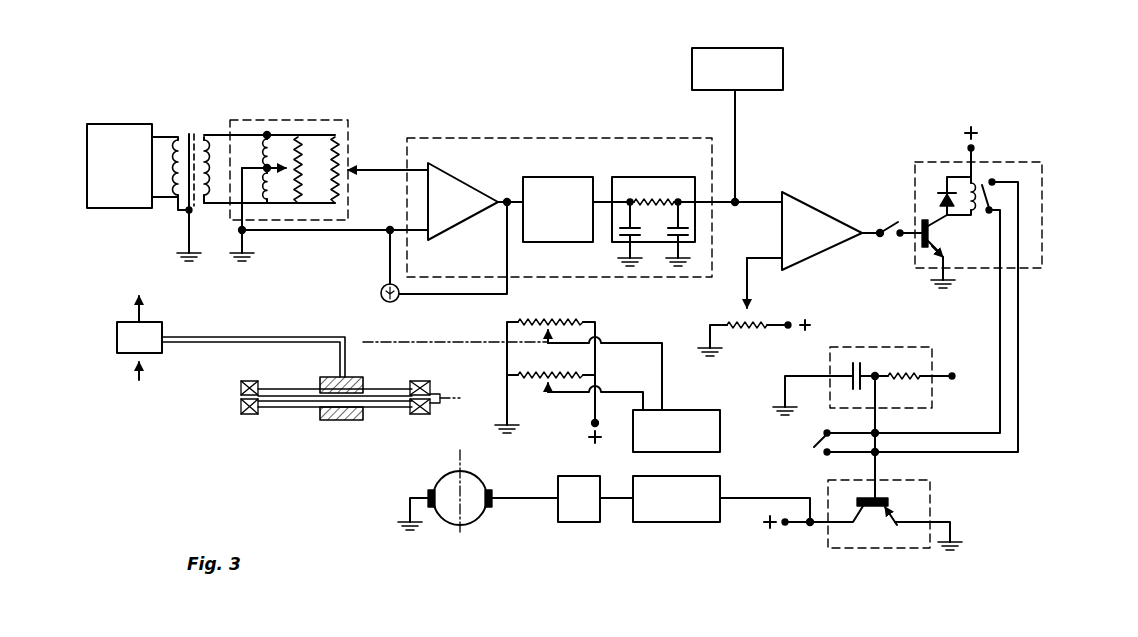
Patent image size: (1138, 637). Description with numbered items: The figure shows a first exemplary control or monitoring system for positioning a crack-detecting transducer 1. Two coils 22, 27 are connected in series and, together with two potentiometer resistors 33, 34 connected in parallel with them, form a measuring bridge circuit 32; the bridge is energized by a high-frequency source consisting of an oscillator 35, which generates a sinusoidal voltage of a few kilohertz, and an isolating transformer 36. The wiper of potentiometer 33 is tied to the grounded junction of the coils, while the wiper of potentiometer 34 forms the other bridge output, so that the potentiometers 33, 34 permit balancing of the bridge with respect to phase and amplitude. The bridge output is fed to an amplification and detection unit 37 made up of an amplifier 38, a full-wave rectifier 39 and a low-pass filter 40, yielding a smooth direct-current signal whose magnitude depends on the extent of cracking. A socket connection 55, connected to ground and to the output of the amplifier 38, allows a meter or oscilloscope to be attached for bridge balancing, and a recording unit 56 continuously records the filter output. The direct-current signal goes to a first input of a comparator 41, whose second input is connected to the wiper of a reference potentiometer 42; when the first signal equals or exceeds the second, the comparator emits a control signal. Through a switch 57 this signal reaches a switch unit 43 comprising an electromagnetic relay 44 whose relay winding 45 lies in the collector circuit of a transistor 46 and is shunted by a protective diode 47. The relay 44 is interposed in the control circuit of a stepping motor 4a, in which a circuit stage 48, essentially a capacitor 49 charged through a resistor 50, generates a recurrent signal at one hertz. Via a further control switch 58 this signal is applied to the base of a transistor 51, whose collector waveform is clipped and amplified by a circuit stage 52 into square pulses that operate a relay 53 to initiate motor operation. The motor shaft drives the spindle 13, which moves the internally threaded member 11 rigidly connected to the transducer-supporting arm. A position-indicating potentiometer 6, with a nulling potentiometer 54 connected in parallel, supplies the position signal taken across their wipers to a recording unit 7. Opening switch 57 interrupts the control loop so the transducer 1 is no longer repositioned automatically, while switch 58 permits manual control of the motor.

The transducer 1 is at (150, 348).
The stepping motor 4a is at (486, 524).
The position-indicating potentiometer 6 is at (566, 318).
The recording unit 7 is at (714, 438).
The internally threaded member 11 is at (330, 418).
The drive spindle 13 is at (387, 402).
The coil 22 is at (262, 150).
The coil 27 is at (272, 190).
The bridge circuit 32 is at (345, 110).
The potentiometer resistor 33 is at (302, 158).
The potentiometer resistor 34 is at (340, 185).
The oscillator 35 is at (116, 135).
The isolating transformer 36 is at (180, 124).
The amplification and detection unit 37 is at (604, 130).
The amplifier 38 is at (450, 188).
The full-wave rectifier 39 is at (545, 192).
The low-pass filter 40 is at (658, 190).
The comparator 41 is at (806, 222).
The reference potentiometer 42 is at (762, 316).
The switch unit 43 is at (1050, 214).
The electromagnetic relay 44 is at (1014, 168).
The relay winding 45 is at (966, 185).
The transistor 46 is at (928, 262).
The diode 47 is at (940, 200).
The recurrent-signal generator stage 48 is at (942, 360).
The capacitor 49 is at (850, 368).
The resistor 50 is at (900, 372).
The transistor 51 is at (865, 518).
The circuit stage 52 is at (678, 512).
The relay 53 is at (582, 512).
The potentiometer 54 is at (532, 382).
The socket connection 55 is at (394, 302).
The recording unit 56 is at (772, 76).
The switch 57 is at (893, 240).
The control switch 58 is at (812, 447).